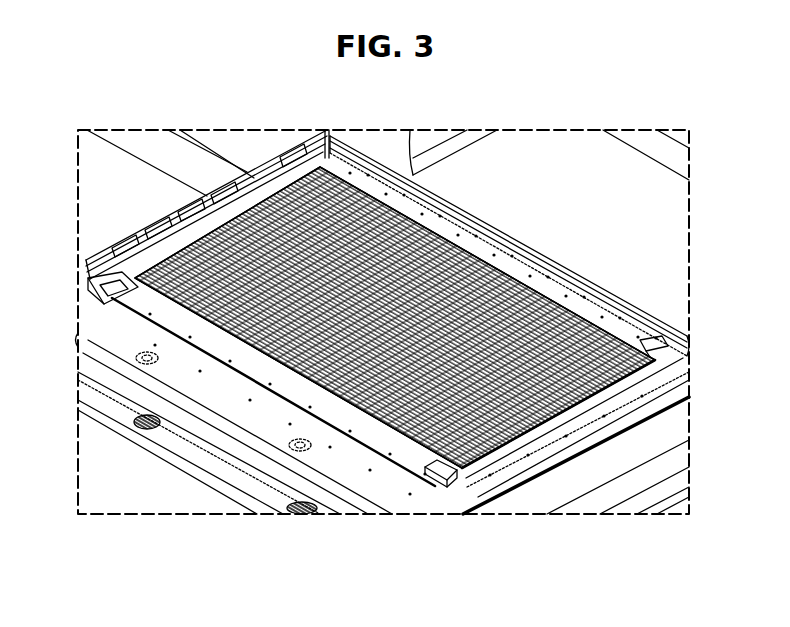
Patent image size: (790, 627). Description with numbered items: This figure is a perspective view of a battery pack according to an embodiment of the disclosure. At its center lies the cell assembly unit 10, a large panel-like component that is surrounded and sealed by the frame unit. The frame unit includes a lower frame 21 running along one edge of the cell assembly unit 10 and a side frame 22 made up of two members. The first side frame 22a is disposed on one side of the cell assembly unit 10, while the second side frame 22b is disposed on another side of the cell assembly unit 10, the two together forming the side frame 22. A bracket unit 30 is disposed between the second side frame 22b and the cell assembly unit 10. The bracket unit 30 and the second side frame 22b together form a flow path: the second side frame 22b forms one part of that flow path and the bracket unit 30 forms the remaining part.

The cell assembly unit 10 is at (186, 242).
The lower frame 21 is at (682, 236).
The side frame 22 is at (383, 454).
The first side frame 22a is at (569, 466).
The second side frame 22b is at (338, 468).
The bracket unit 30 is at (130, 297).